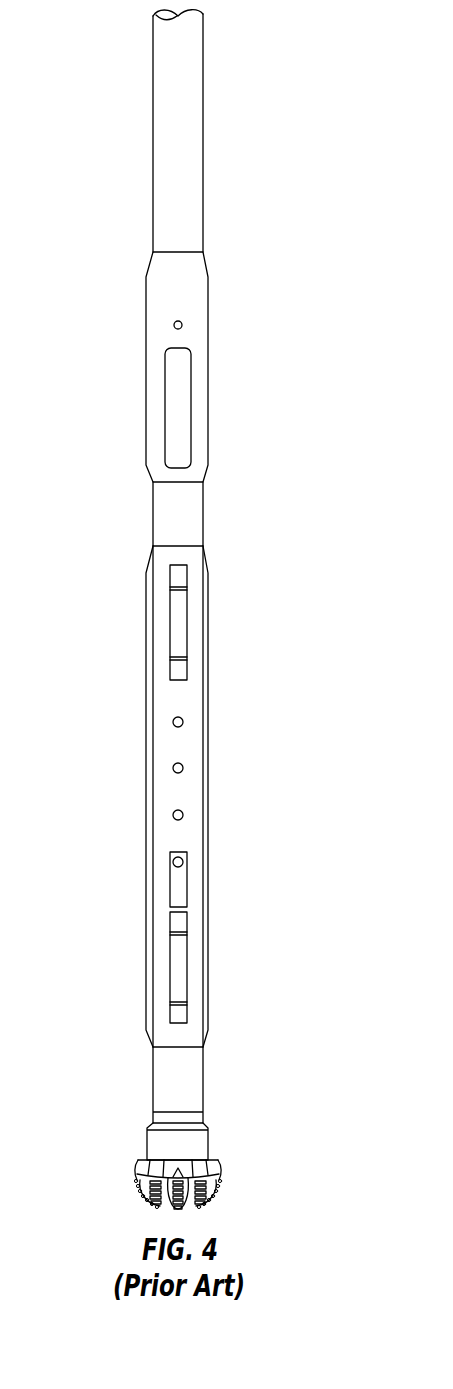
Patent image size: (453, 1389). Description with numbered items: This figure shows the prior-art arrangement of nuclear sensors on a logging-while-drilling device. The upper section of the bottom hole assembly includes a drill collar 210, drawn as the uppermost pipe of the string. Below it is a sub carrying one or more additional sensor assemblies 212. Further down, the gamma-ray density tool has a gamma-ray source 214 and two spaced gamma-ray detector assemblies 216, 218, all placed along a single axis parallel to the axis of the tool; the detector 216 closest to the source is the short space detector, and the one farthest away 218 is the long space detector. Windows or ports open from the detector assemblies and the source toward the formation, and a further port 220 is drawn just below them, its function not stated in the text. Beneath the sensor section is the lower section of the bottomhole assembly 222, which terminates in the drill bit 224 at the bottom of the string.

The drill collar 210 is at (146, 72).
The additional sensor assemblies 212 is at (210, 405).
The gamma-ray source 214 is at (184, 721).
The short space detector 216 is at (184, 767).
The long space detector 218 is at (184, 814).
The port 220 is at (184, 861).
The lower section of the bottomhole assembly 222 is at (205, 1085).
The drill bit 224 is at (236, 1178).